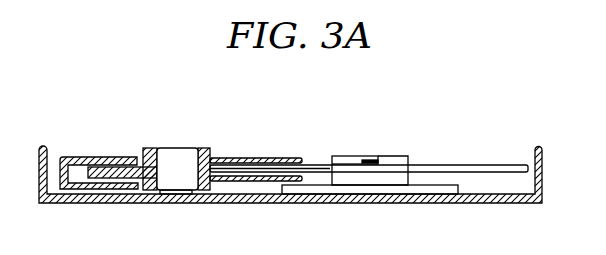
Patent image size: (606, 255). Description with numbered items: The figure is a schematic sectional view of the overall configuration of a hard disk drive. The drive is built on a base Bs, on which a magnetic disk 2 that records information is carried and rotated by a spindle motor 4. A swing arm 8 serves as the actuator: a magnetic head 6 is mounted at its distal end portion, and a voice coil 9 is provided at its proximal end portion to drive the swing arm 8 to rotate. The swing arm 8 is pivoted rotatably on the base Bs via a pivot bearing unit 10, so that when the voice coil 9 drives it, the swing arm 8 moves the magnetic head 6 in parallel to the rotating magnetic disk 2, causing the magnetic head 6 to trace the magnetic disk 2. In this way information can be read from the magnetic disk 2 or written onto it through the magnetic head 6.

The magnetic disk 2 is at (466, 166).
The spindle motor 4 is at (402, 156).
The magnetic head 6 is at (366, 160).
The swing arm 8 is at (258, 157).
The voice coil 9 is at (102, 157).
The pivot bearing unit 10 is at (177, 148).
The base Bs is at (392, 203).